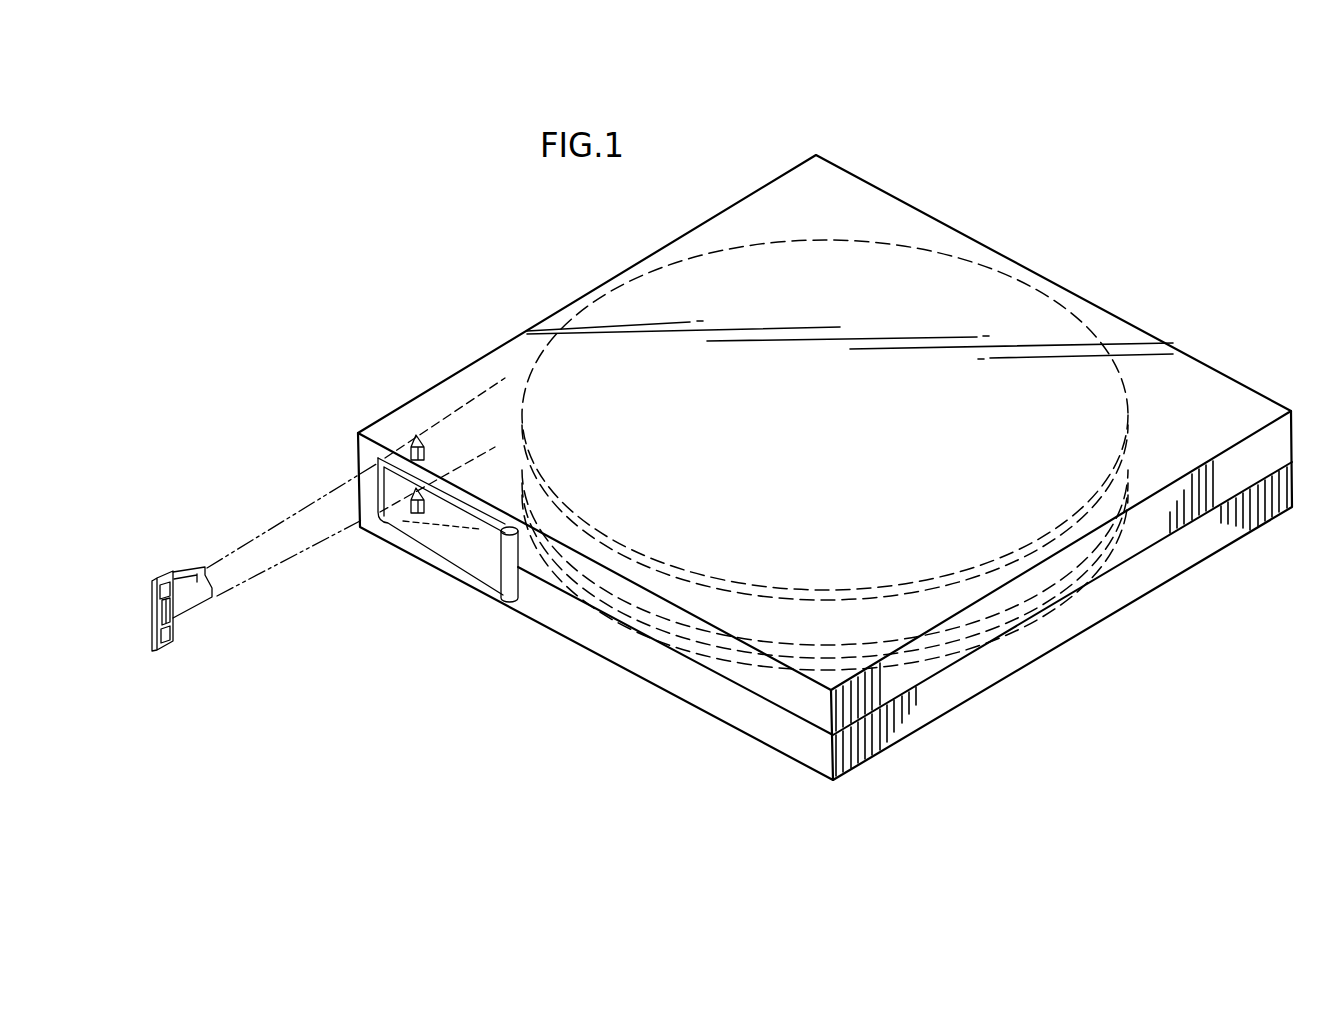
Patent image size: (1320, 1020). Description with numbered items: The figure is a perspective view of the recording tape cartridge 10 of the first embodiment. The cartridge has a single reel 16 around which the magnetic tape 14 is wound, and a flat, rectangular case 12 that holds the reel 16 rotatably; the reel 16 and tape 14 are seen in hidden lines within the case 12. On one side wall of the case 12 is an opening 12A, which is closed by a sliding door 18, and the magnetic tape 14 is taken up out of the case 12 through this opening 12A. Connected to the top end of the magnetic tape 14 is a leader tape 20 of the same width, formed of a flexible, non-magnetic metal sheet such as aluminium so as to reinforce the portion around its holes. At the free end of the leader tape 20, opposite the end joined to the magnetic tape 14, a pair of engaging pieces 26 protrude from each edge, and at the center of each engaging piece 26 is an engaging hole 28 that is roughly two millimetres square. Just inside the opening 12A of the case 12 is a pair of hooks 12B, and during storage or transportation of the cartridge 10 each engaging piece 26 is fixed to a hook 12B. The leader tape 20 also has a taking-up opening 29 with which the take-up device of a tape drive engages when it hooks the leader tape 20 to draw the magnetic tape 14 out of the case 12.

The recording tape cartridge 10 is at (1014, 212).
The case 12 is at (864, 192).
The opening 12A is at (460, 553).
The hooks 12B is at (433, 430).
The magnetic tape 14 is at (322, 526).
The reel 16 is at (1063, 327).
The sliding door 18 is at (508, 604).
The leader tape 20 is at (198, 570).
The engaging pieces 26 is at (155, 578).
The engaging hole 28 is at (166, 582).
The taking-up opening 29 is at (160, 612).